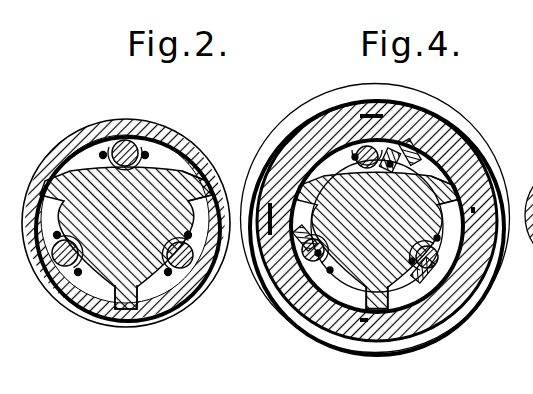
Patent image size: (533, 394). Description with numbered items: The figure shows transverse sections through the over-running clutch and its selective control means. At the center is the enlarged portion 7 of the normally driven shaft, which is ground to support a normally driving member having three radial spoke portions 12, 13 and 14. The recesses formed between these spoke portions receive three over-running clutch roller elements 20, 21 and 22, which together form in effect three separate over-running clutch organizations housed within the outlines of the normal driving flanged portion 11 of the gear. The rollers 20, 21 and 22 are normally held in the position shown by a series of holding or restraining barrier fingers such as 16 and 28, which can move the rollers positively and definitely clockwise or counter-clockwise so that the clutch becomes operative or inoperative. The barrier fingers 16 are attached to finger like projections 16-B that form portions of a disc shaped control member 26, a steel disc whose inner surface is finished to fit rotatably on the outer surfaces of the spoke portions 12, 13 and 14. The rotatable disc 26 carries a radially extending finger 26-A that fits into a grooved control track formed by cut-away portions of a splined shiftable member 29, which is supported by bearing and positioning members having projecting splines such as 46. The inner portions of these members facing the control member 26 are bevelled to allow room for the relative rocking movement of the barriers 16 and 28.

In FIG. 2, the enlarged portion 7 is at (118, 260).
In FIG. 4, the enlarged portion 7 is at (368, 262).
In FIG. 2, the normal driving flanged portion 11 is at (113, 129).
In FIG. 2, the radial spoke portion 12 is at (62, 181).
In FIG. 4, the radial spoke portion 12 is at (270, 168).
In FIG. 2, the radial spoke portion 13 is at (127, 300).
In FIG. 4, the radial spoke portion 13 is at (448, 300).
In FIG. 2, the radial spoke portion 14 is at (192, 170).
In FIG. 4, the radial spoke portion 14 is at (470, 165).
In FIG. 2, the barrier finger 16 is at (148, 152).
In FIG. 4, the finger like projection 16-B is at (410, 147).
In FIG. 2, the over-running clutch roller element 20 is at (53, 254).
In FIG. 4, the over-running clutch roller element 20 is at (312, 279).
In FIG. 2, the over-running clutch roller element 21 is at (186, 258).
In FIG. 4, the over-running clutch roller element 21 is at (476, 261).
In FIG. 2, the over-running clutch roller element 22 is at (134, 133).
In FIG. 4, the over-running clutch roller element 22 is at (373, 157).
In FIG. 4, the disc shaped control member 26 is at (362, 322).
In FIG. 4, the radially extending finger 26-A is at (440, 152).
In FIG. 2, the barrier finger 28 is at (100, 154).
In FIG. 4, the barrier finger 28 is at (288, 143).
In FIG. 4, the splined shiftable member 29 is at (310, 107).
In FIG. 4, the projecting spline 46 is at (531, 184).